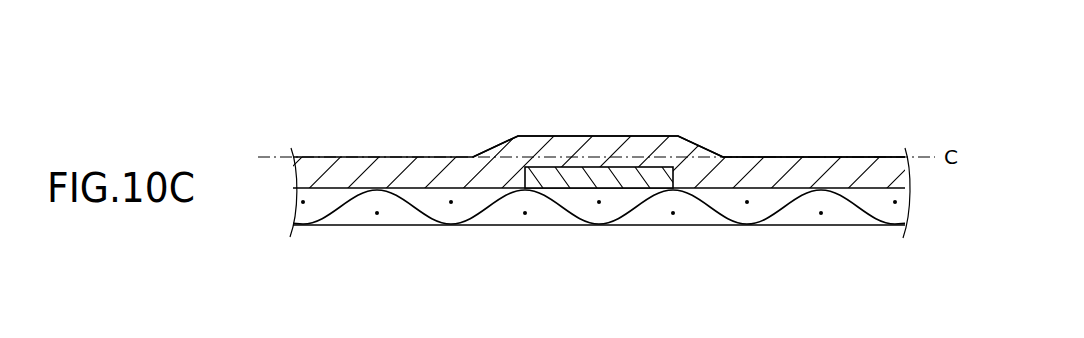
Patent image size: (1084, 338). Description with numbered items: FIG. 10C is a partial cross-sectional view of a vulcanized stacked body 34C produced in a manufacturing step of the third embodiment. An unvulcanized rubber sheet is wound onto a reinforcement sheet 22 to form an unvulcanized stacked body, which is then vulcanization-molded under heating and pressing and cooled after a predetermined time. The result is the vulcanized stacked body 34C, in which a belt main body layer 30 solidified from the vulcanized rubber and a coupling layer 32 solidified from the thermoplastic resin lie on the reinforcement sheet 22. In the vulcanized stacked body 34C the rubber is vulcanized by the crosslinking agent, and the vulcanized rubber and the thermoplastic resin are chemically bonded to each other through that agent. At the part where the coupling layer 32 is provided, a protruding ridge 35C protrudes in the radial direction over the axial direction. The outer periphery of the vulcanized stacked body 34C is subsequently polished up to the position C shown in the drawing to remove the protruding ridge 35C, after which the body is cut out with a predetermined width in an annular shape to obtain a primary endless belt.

The reinforcement sheet 22 is at (800, 212).
The belt main body layer 30 is at (388, 173).
The coupling layer 32 is at (630, 178).
The vulcanized stacked body 34C is at (834, 129).
The protruding ridge 35C is at (677, 120).